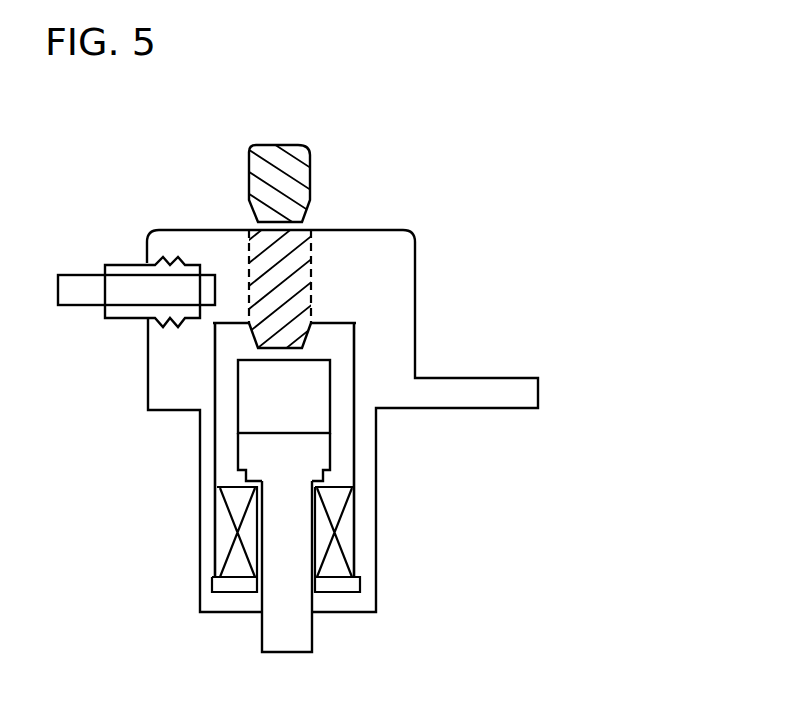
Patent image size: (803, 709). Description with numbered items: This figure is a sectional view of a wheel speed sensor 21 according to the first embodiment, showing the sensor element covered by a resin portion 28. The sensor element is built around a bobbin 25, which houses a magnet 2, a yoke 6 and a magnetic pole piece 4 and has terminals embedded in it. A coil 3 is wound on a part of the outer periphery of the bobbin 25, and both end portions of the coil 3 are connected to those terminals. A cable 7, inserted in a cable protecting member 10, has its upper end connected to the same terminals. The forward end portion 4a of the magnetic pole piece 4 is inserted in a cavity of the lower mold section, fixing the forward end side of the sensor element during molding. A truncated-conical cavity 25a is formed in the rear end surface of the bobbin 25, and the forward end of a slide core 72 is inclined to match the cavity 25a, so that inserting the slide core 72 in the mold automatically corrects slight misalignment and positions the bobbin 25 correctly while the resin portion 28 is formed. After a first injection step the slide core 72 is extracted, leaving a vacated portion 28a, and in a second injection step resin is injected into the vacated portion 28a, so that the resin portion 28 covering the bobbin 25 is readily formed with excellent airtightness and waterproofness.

The magnet 2 is at (262, 455).
The coil 3 is at (235, 558).
The magnetic pole piece 4 is at (292, 540).
The forward end portion 4a is at (293, 633).
The yoke 6 is at (265, 410).
The cable 7 is at (95, 297).
The cable protecting member 10 is at (123, 268).
The wheel speed sensor 21 is at (420, 191).
The bobbin 25 is at (340, 453).
The truncated-conical cavity 25a is at (295, 312).
The resin portion 28 is at (173, 382).
The vacated portion 28a is at (293, 270).
The slide core 72 is at (267, 182).